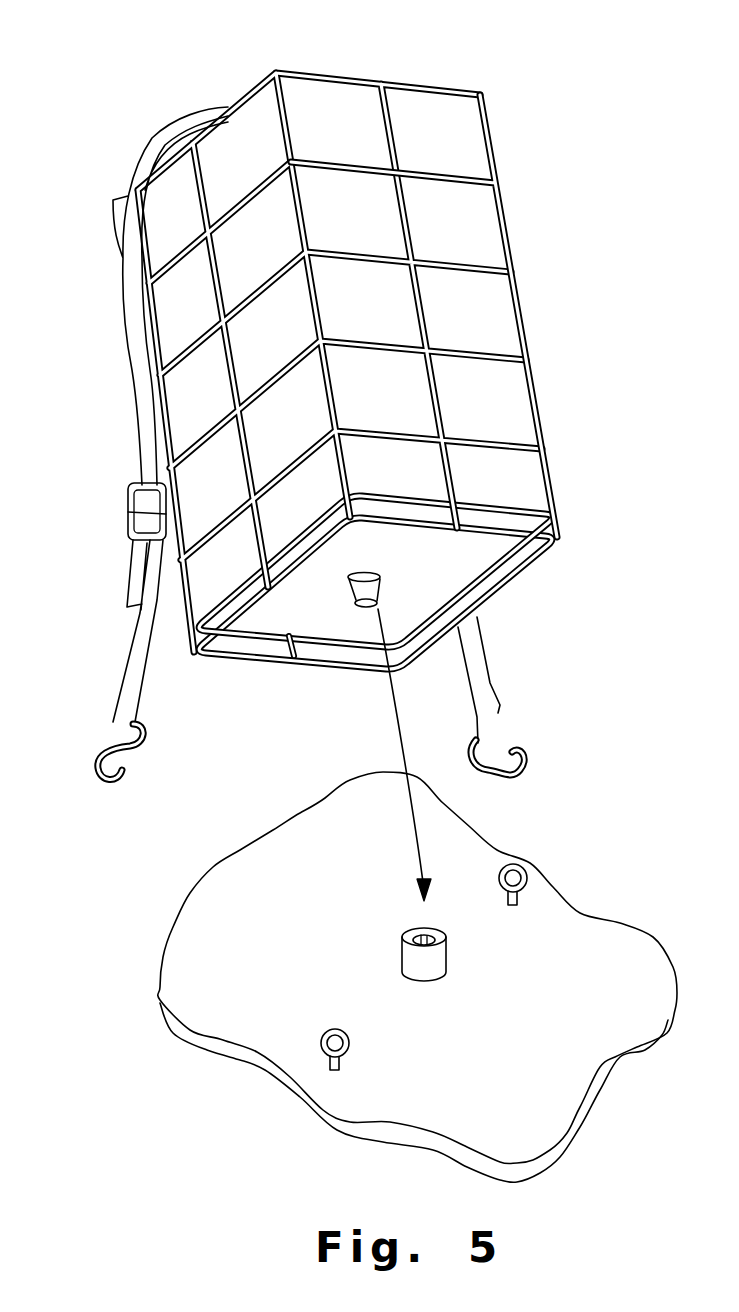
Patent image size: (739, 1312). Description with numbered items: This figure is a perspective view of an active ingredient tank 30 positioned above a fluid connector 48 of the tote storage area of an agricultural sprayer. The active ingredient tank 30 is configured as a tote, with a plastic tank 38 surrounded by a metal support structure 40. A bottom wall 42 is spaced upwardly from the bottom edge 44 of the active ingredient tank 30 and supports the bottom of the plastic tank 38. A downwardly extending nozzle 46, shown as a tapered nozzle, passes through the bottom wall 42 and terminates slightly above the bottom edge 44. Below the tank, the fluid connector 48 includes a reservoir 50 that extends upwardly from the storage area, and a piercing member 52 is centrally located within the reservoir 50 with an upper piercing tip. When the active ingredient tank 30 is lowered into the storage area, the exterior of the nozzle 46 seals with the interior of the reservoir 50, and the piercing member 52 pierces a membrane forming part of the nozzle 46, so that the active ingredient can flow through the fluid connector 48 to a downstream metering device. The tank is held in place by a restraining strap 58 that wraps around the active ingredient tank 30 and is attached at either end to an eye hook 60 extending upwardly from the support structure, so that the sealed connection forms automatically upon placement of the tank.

The active ingredient tank 30 is at (525, 142).
The plastic tank 38 is at (379, 454).
The metal support structure 40 is at (455, 182).
The bottom wall 42 is at (409, 582).
The bottom edge 44 is at (543, 558).
The nozzle 46 is at (347, 606).
The fluid connector 48 is at (386, 960).
The reservoir 50 is at (446, 960).
The piercing member 52 is at (418, 938).
The restraining strap 58 is at (140, 397).
The eye hook 60 is at (530, 872).